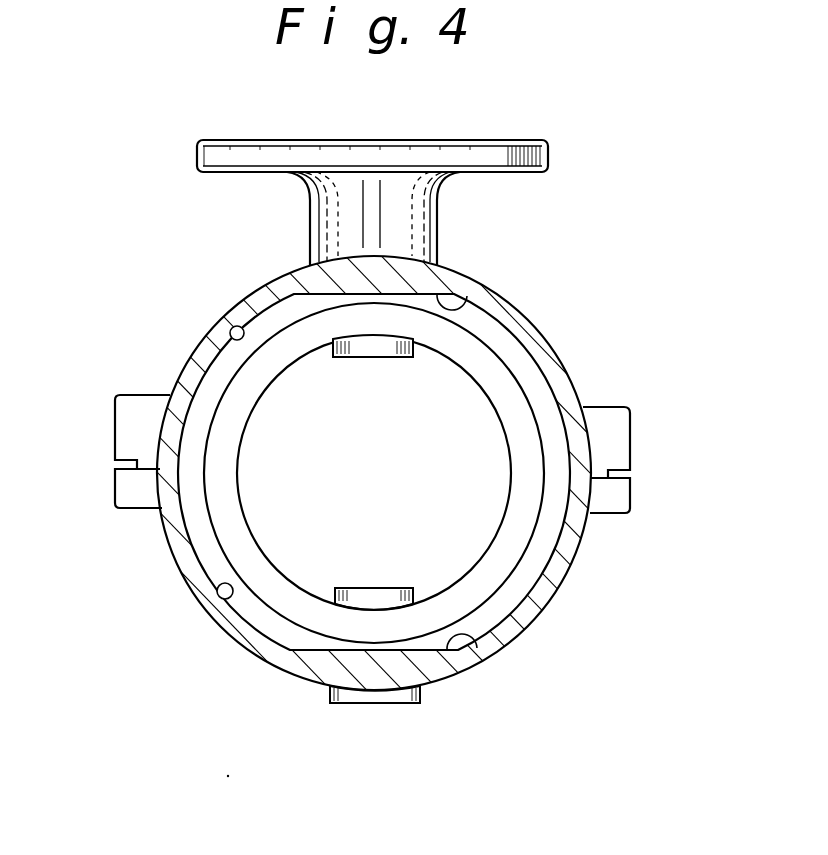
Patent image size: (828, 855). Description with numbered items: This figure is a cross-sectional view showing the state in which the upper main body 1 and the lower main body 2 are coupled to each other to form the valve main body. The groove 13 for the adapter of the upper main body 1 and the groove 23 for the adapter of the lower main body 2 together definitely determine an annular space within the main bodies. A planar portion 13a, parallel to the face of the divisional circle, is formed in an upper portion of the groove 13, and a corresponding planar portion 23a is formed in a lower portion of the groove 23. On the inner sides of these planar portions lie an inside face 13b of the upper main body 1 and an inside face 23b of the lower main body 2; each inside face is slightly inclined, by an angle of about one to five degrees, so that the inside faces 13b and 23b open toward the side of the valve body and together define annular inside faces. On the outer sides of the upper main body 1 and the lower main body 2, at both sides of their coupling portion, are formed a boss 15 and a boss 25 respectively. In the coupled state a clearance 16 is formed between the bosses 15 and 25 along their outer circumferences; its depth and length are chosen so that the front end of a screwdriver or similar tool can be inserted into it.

The upper main body 1 is at (551, 128).
The lower main body 2 is at (272, 700).
The groove for the adapter 13 is at (235, 325).
The planar portion 13a is at (478, 302).
The inside face 13b is at (508, 385).
The boss 15 is at (147, 390).
The clearance 16 is at (128, 465).
The groove for the adapter 23 is at (222, 600).
The planar portion 23a is at (505, 647).
The inside face 23b is at (512, 566).
The boss 25 is at (136, 510).